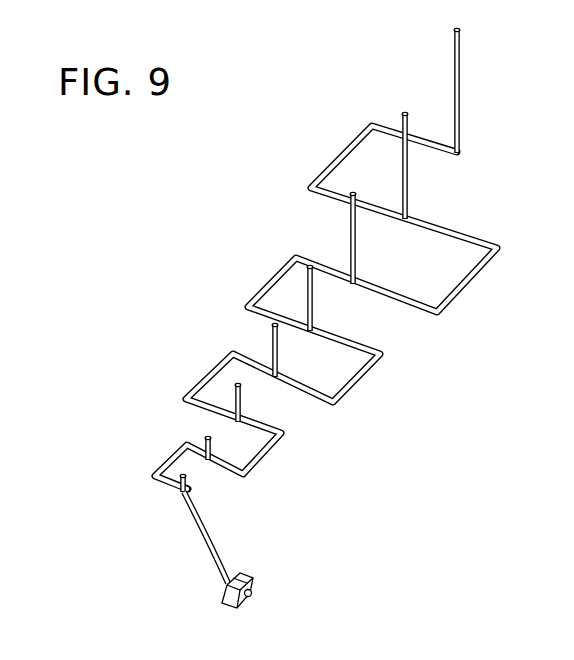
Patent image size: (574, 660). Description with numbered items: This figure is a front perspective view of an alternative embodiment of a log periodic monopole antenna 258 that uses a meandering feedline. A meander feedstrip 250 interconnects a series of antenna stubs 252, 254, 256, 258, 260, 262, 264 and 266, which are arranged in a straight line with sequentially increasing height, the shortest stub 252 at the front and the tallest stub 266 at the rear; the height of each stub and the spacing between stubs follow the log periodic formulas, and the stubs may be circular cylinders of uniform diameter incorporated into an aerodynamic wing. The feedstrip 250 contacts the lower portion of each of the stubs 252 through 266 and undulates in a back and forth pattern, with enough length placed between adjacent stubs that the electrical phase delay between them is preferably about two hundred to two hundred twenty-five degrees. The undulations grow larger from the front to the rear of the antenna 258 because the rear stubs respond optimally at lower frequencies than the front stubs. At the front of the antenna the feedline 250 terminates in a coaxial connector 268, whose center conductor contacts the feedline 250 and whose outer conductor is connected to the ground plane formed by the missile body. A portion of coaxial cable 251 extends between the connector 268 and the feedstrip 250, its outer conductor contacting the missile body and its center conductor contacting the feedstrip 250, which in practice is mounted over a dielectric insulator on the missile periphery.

The meander feedstrip 250 is at (215, 463).
The coaxial cable 251 is at (207, 550).
The antenna stub 252 is at (180, 490).
The antenna stub 254 is at (204, 446).
The antenna stub 256 is at (242, 415).
The antenna stub 258 is at (271, 330).
The antenna stub 260 is at (313, 328).
The antenna stub 262 is at (357, 205).
The antenna stub 264 is at (400, 209).
The antenna stub 266 is at (453, 33).
The connector 268 is at (249, 577).